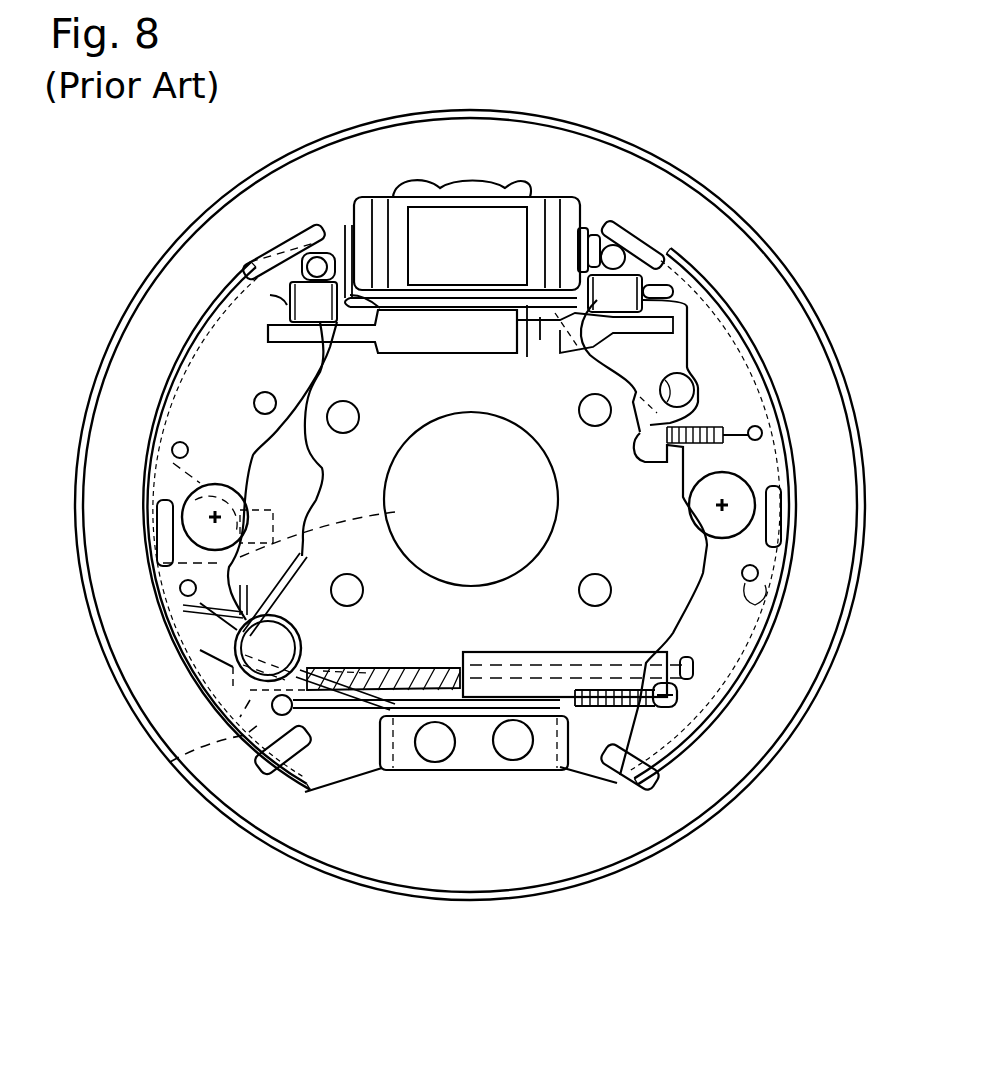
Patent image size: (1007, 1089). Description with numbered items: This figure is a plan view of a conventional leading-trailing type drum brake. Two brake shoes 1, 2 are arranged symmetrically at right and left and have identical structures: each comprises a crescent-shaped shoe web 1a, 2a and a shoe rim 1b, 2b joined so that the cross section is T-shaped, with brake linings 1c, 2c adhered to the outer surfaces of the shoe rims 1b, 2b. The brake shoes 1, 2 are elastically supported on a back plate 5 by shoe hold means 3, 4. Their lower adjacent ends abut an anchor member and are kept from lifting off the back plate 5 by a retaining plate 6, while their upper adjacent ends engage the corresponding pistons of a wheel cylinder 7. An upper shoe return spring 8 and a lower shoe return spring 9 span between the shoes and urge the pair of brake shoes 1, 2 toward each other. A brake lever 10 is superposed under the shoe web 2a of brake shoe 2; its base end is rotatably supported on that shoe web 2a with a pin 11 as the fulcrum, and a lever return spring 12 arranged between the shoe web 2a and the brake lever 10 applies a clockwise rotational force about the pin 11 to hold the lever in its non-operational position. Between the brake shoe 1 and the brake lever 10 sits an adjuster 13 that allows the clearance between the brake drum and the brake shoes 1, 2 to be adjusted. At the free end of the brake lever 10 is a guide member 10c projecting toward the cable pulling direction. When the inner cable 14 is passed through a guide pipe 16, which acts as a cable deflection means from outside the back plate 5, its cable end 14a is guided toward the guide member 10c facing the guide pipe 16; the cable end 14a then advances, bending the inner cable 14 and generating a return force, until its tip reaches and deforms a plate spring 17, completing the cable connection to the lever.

The brake shoe 1 is at (725, 505).
The shoe web 1a is at (748, 625).
The shoe rim 1b is at (752, 672).
The brake lining 1c is at (728, 704).
The brake shoe 2 is at (220, 463).
The shoe web 2a is at (214, 300).
The shoe rim 2b is at (192, 345).
The brake lining 2c is at (174, 375).
The shoe hold means 3 is at (757, 472).
The shoe hold means 4 is at (180, 490).
The back plate 5 is at (652, 870).
The retaining plate 6 is at (490, 760).
The wheel cylinder 7 is at (445, 195).
The upper shoe return spring 8 is at (672, 256).
The lower shoe return spring 9 is at (645, 715).
The brake lever 10 is at (268, 450).
The guide member 10c is at (378, 632).
The pin 11 is at (317, 258).
The lever return spring 12 is at (235, 650).
The adjuster 13 is at (462, 346).
The inner cable 14 is at (415, 655).
The cable end 14a is at (171, 761).
The guide pipe 16 is at (602, 652).
The plate spring 17 is at (471, 499).